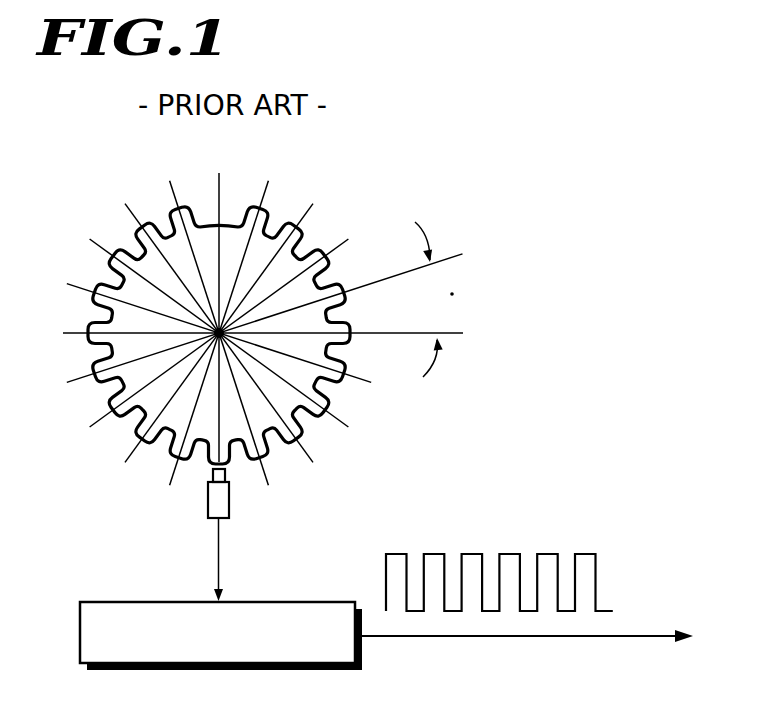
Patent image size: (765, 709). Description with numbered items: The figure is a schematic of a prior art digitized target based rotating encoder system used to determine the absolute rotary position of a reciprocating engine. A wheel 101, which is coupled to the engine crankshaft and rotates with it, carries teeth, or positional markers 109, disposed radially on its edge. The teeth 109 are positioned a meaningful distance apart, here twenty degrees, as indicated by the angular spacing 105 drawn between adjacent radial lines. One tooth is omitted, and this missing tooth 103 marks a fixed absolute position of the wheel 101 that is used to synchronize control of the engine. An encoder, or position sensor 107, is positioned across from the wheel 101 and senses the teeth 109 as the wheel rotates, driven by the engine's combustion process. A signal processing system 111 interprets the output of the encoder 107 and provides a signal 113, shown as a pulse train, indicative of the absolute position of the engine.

The wheel 101 is at (127, 320).
The missing tooth 103 is at (231, 196).
The tooth spacing angle (20 degrees) 105 is at (422, 313).
The position sensor 107 is at (233, 502).
The teeth 109 is at (206, 459).
The signal processing system 111 is at (80, 627).
The signal 113 is at (602, 582).